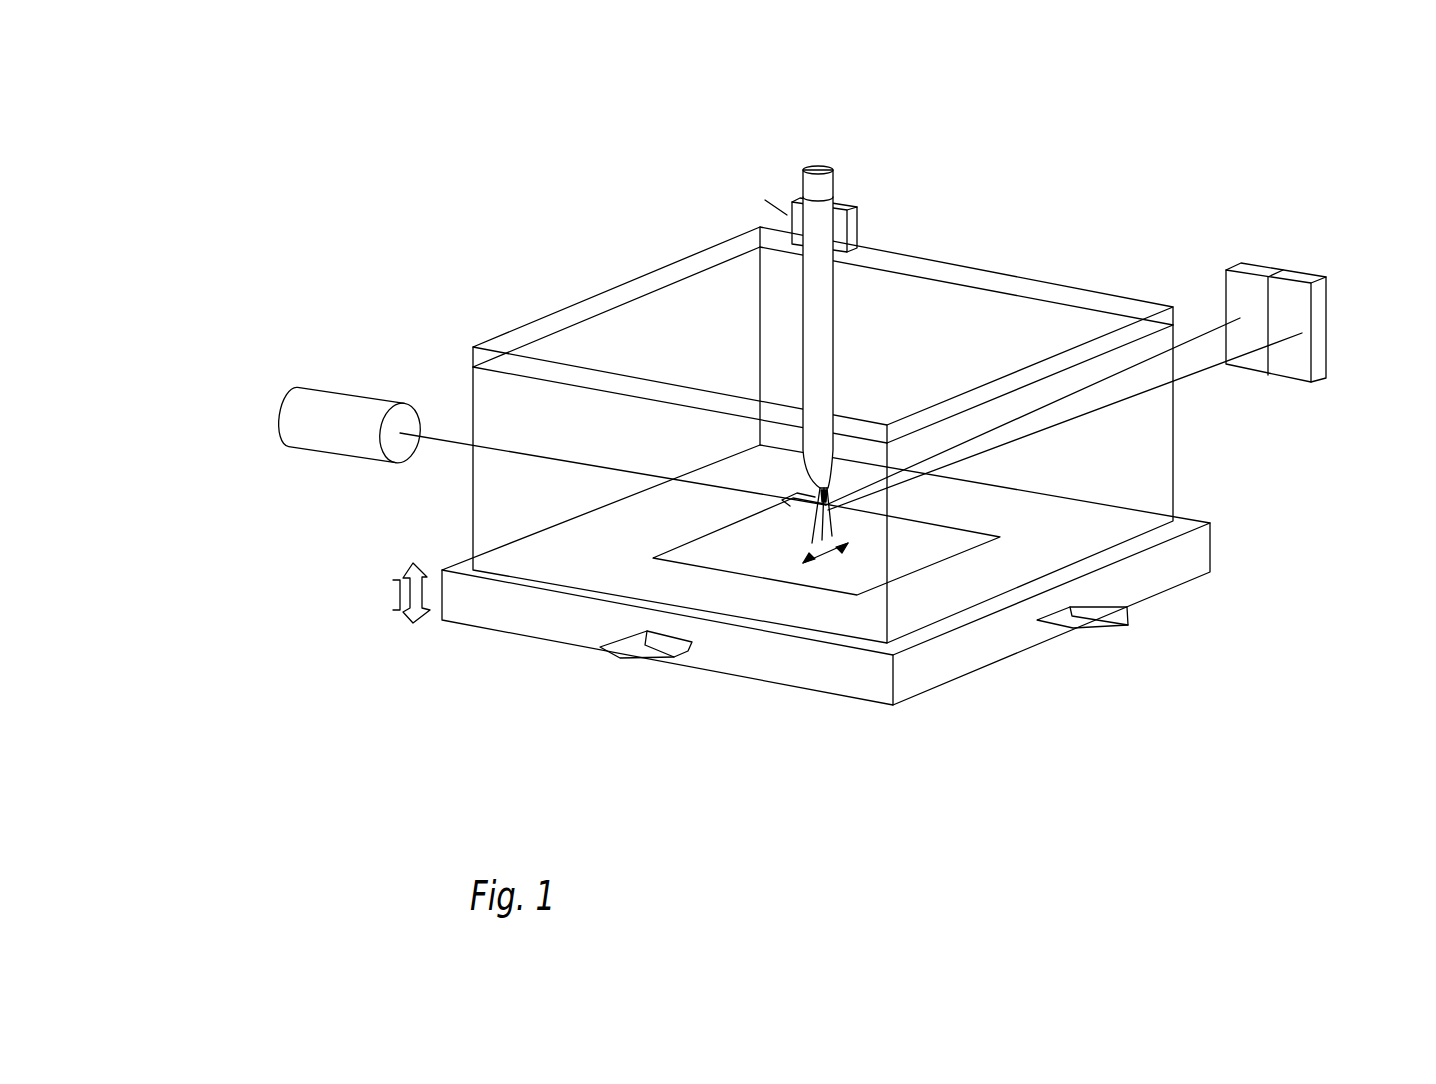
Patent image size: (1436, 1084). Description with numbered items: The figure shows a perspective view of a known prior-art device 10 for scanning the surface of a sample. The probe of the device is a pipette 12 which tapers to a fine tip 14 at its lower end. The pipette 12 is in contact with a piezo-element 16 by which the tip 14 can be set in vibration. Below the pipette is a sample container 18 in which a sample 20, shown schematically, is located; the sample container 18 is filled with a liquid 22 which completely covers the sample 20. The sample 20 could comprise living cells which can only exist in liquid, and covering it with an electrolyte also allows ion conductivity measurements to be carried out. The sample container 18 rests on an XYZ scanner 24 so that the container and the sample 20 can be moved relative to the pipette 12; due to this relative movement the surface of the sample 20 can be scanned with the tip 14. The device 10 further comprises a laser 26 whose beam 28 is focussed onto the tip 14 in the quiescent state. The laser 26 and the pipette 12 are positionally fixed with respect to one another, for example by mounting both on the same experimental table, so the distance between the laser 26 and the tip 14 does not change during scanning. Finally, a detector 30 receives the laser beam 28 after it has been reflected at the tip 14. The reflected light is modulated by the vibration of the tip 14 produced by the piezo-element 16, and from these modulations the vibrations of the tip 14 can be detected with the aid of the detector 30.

The device 10 is at (507, 185).
The pipette 12 is at (838, 323).
The tip 14 is at (820, 489).
The piezo-element 16 is at (860, 230).
The sample container 18 is at (1173, 308).
The sample 20 is at (943, 547).
The liquid 22 is at (1122, 438).
The XYZ scanner 24 is at (960, 665).
The laser 26 is at (317, 397).
The laser beam 28 is at (580, 467).
The detector 30 is at (1322, 320).